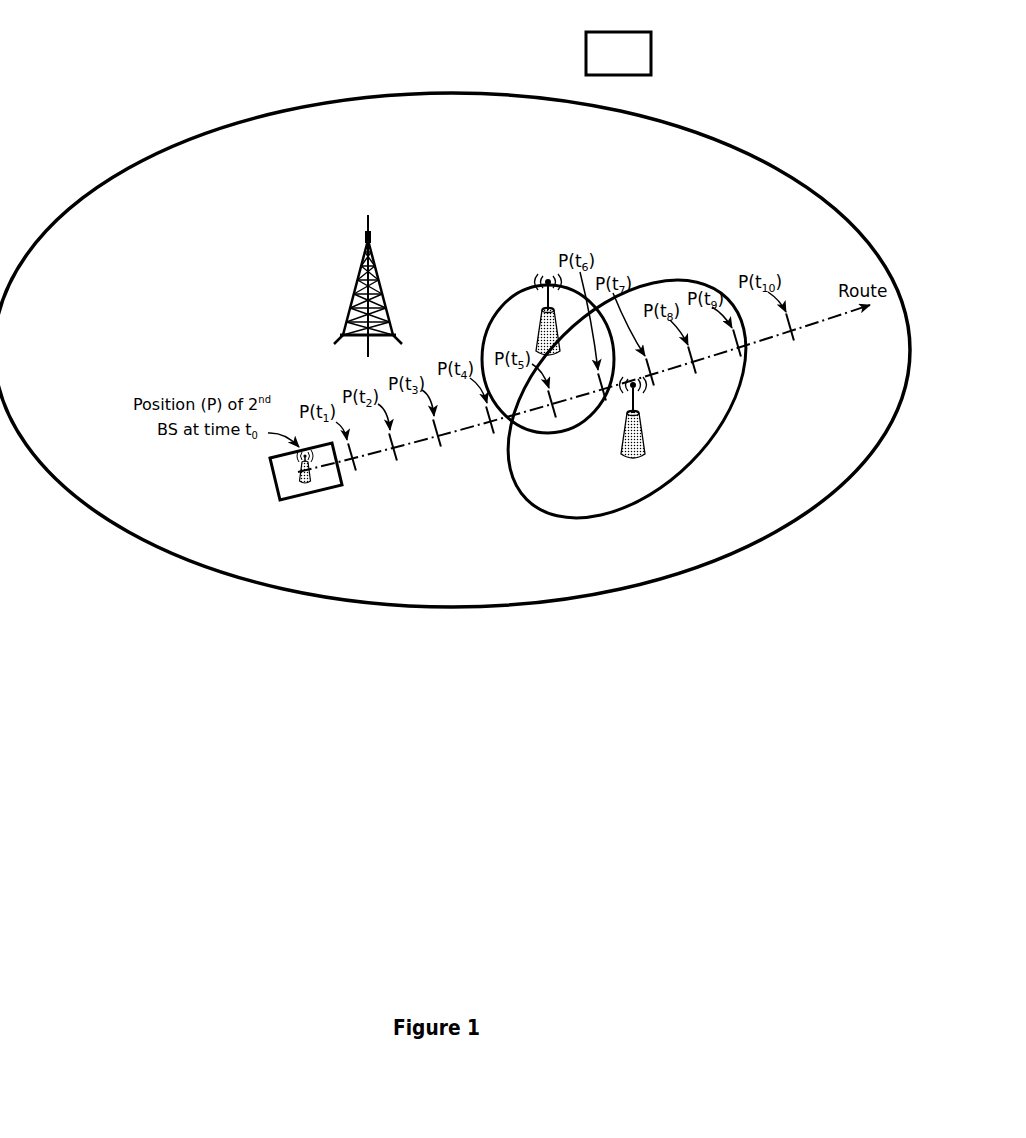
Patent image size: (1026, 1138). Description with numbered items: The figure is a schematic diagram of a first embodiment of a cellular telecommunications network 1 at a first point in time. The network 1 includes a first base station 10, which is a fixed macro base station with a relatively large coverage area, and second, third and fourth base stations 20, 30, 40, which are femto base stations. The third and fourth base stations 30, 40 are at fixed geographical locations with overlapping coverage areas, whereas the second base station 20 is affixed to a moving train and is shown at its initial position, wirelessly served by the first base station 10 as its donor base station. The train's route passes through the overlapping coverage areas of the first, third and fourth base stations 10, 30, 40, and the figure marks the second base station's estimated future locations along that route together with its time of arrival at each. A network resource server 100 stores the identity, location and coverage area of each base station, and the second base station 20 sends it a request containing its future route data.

The cellular telecommunications network 1 is at (96, 90).
The network resource server 100 is at (586, 47).
The first base station 10 is at (352, 292).
The second base station 20 is at (300, 480).
The third base station 30 is at (536, 325).
The fourth base station 40 is at (647, 453).